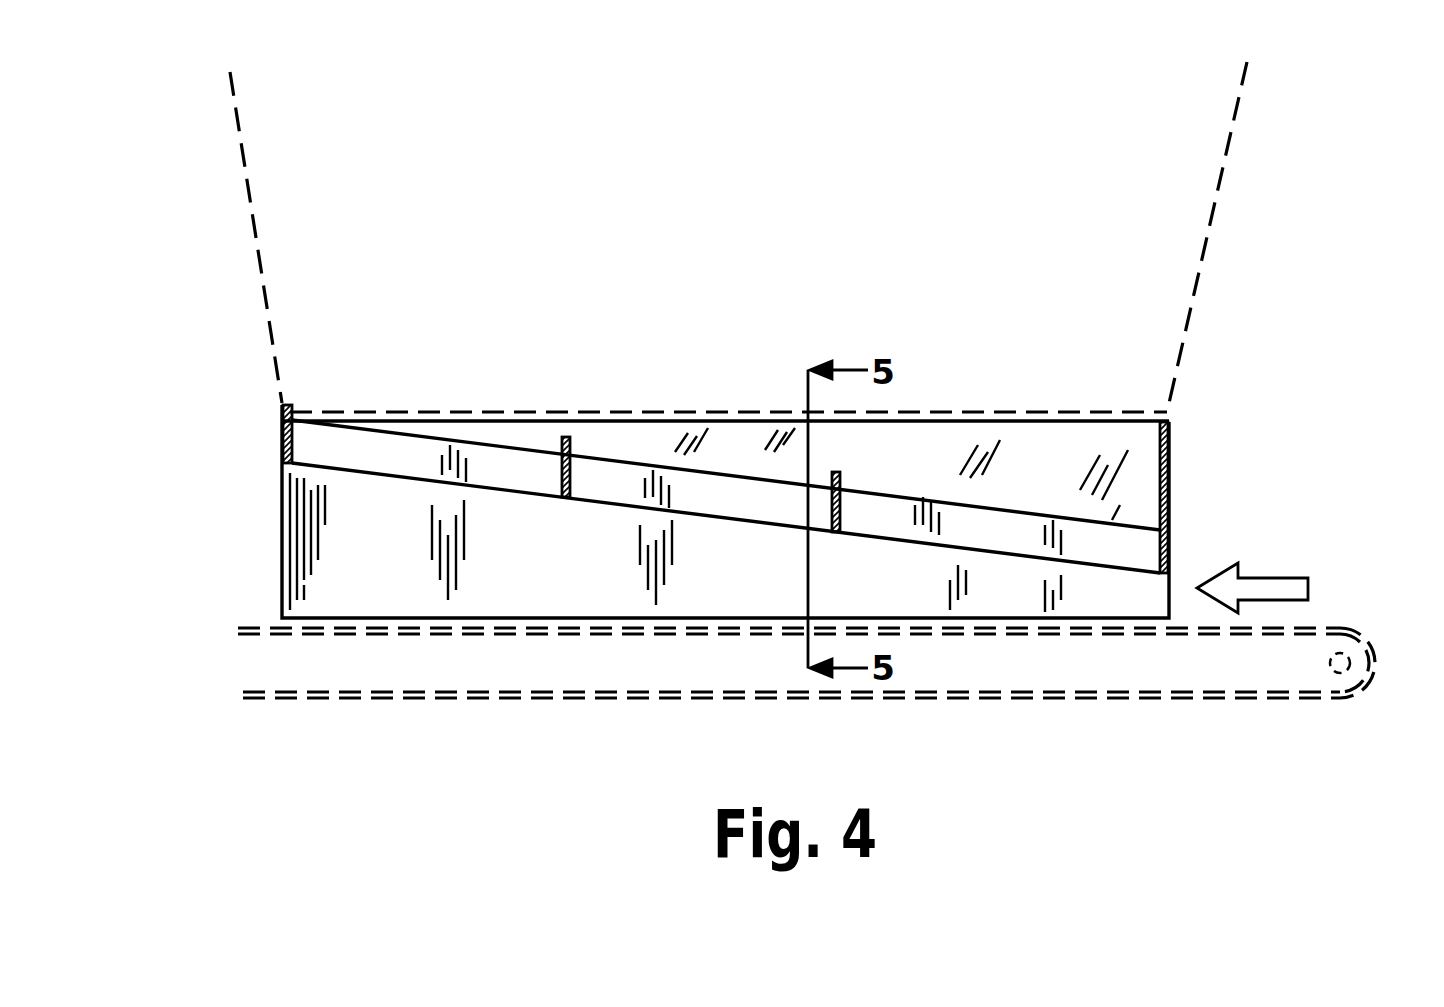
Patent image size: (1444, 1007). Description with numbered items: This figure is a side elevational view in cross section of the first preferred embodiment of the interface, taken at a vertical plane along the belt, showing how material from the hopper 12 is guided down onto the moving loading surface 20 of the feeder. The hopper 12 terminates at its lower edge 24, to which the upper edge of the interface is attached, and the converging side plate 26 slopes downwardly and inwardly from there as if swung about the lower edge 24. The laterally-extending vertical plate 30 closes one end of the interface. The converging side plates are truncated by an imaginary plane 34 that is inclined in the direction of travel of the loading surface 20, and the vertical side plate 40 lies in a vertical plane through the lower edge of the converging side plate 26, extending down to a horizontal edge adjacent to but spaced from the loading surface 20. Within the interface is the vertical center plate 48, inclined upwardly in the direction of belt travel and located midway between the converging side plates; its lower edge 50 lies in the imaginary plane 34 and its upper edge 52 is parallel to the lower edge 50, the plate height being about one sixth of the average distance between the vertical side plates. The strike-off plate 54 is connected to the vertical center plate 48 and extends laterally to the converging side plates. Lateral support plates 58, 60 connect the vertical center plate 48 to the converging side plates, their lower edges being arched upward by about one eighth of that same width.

The hopper 12 is at (1137, 257).
The loading surface 20 is at (1307, 626).
The lower edge of the hopper 24 is at (755, 410).
The converging side plate 26 is at (1045, 418).
The laterally-extending vertical plate 30 is at (1168, 450).
The imaginary plane 34 is at (400, 477).
The vertical side plate 40 is at (573, 580).
The vertical center plate 48 is at (396, 450).
The lower edge of the vertical center plate 50 is at (928, 548).
The upper edge of the vertical center plate 52 is at (505, 450).
The strike-off plate 54 is at (283, 432).
The lateral support plate 58 is at (600, 455).
The lateral support plate 60 is at (835, 475).